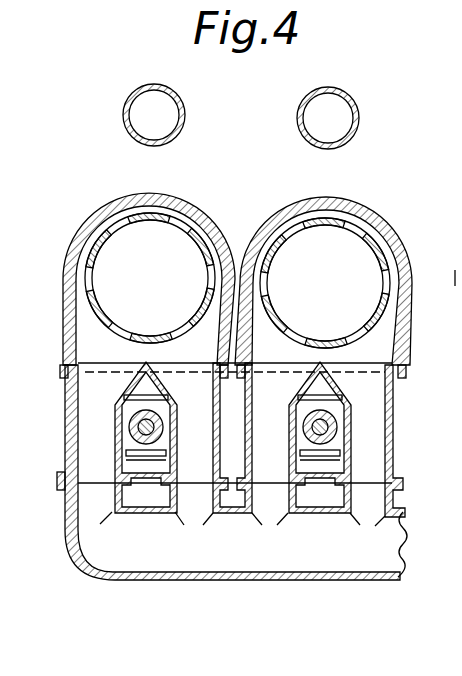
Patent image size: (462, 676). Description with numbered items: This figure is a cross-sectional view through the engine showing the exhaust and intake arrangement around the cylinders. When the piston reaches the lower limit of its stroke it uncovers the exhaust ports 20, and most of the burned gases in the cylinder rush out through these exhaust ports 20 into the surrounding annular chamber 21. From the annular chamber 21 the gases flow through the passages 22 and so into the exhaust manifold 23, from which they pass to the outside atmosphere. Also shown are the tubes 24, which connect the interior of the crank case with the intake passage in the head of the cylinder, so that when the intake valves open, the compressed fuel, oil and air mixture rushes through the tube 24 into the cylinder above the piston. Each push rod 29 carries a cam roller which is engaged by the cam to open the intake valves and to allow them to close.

The exhaust ports 20 is at (190, 242).
The annular chamber 21 is at (122, 210).
The passages 22 is at (90, 453).
The exhaust manifold 23 is at (253, 582).
The tube 24 is at (298, 108).
The push rod 29 is at (130, 428).